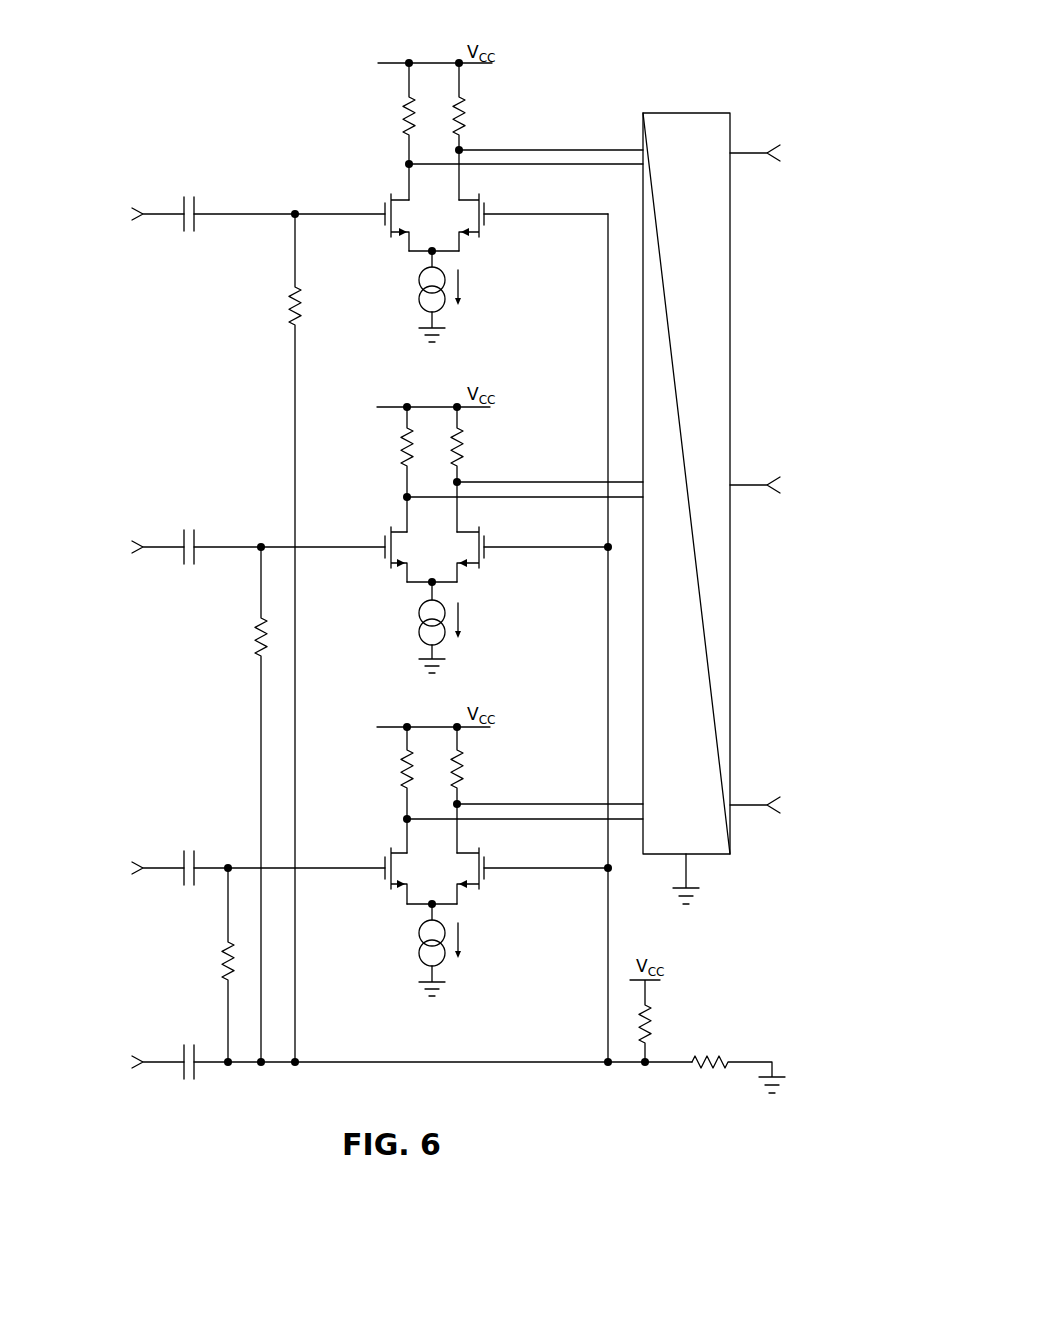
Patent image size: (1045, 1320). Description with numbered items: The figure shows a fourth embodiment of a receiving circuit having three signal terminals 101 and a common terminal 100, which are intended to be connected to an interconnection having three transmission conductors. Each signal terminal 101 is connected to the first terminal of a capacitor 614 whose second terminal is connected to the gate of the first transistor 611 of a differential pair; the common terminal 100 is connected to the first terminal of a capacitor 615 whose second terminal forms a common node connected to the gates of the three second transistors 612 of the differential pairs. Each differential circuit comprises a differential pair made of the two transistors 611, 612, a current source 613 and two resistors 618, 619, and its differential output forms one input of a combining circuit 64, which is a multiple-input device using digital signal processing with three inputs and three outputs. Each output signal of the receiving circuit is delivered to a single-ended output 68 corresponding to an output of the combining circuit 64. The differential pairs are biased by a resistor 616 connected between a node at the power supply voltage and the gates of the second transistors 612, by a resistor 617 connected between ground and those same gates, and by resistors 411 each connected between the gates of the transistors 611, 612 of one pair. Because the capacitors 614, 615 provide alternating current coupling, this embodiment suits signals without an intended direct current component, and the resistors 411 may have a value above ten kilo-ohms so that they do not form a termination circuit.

The common terminal 100 is at (125, 1060).
The signal terminal 101 is at (125, 209).
The resistor 411 is at (282, 302).
The combining circuit 64 is at (694, 89).
The output 68 is at (774, 142).
The first transistor 611 is at (370, 194).
The second transistor 612 is at (500, 226).
The current source 613 is at (478, 297).
The capacitor 614 is at (186, 182).
The capacitor 615 is at (185, 1033).
The resistor 616 is at (665, 1027).
The resistor 617 is at (723, 1053).
The resistor 618 is at (389, 121).
The resistor 619 is at (478, 120).